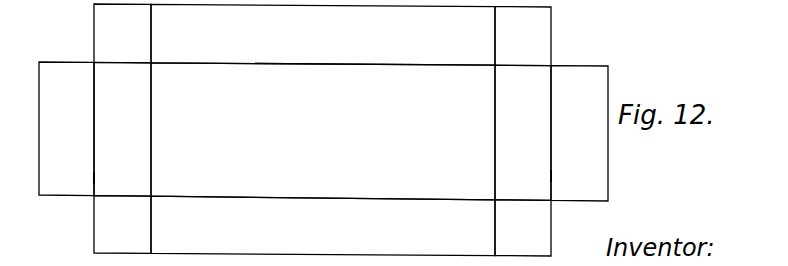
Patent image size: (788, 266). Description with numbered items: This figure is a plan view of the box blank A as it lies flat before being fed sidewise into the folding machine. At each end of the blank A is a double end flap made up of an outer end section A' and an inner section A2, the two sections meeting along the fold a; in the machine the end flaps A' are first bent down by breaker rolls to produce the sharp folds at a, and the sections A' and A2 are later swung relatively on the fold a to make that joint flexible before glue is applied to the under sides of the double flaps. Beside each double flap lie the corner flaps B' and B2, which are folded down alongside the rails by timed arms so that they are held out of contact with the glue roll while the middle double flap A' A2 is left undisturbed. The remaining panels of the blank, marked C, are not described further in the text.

The box blank A is at (323, 131).
The inner section of the double end flap A2 is at (322, 131).
The end flap A' is at (323, 131).
The flap B2 is at (322, 35).
The flap B' is at (322, 226).
The cover panel C is at (323, 129).
The fold a is at (96, 178).